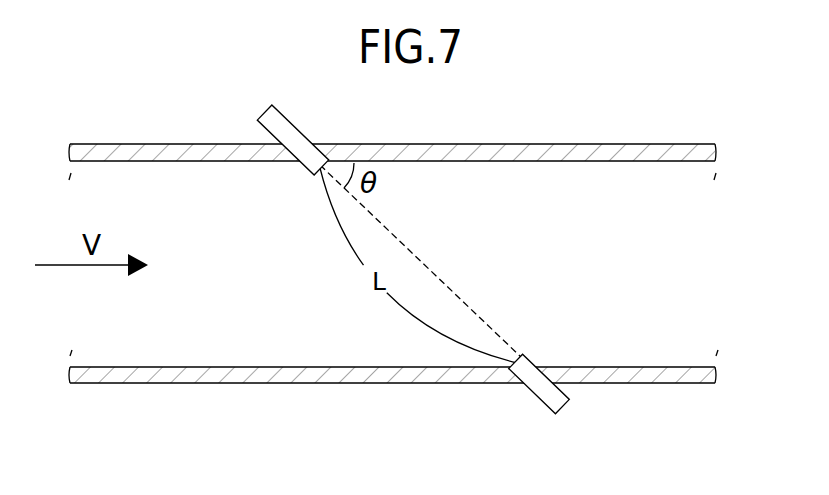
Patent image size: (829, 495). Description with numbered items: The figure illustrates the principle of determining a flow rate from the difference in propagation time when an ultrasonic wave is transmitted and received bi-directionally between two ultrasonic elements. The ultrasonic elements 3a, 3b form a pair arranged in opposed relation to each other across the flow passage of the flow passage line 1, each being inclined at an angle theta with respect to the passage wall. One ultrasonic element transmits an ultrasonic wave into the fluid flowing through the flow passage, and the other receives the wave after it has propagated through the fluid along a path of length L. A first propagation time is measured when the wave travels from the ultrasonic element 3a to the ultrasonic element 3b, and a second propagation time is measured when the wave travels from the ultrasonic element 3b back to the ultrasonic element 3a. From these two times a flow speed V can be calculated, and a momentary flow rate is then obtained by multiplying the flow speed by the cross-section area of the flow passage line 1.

The flow passage line 1 is at (603, 153).
The ultrasonic element 3a is at (278, 120).
The ultrasonic element 3b is at (552, 403).